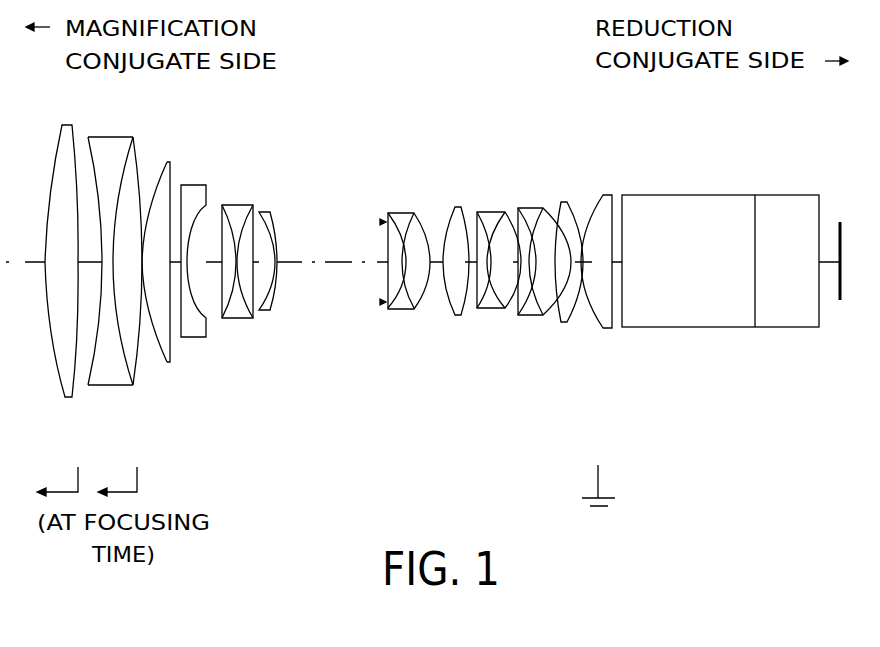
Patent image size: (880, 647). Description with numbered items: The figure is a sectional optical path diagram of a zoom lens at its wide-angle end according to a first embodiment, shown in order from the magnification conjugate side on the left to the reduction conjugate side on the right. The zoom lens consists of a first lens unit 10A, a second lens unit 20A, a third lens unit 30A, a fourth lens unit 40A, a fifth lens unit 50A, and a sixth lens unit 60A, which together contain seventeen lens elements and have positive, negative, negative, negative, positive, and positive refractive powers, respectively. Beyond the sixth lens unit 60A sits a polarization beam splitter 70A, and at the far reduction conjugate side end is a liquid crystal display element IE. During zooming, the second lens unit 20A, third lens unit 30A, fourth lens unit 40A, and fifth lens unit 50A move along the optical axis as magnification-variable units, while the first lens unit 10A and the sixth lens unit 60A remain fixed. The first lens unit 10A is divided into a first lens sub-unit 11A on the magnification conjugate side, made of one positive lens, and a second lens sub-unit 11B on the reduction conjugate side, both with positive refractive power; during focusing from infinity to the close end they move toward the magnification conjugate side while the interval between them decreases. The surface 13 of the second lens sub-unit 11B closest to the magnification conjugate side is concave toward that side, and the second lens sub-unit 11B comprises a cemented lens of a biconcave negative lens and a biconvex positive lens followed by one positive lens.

The first lens unit 10A is at (180, 127).
The first lens sub-unit 11A is at (52, 413).
The second lens sub-unit 11B is at (173, 413).
The surface 13 is at (96, 188).
The second lens unit 20A is at (241, 510).
The third lens unit 30A is at (292, 510).
The fourth lens unit 40A is at (372, 517).
The fifth lens unit 50A is at (440, 517).
The sixth lens unit 60A is at (618, 380).
The polarization beam splitter 70A is at (692, 312).
The liquid crystal display element IE is at (842, 280).